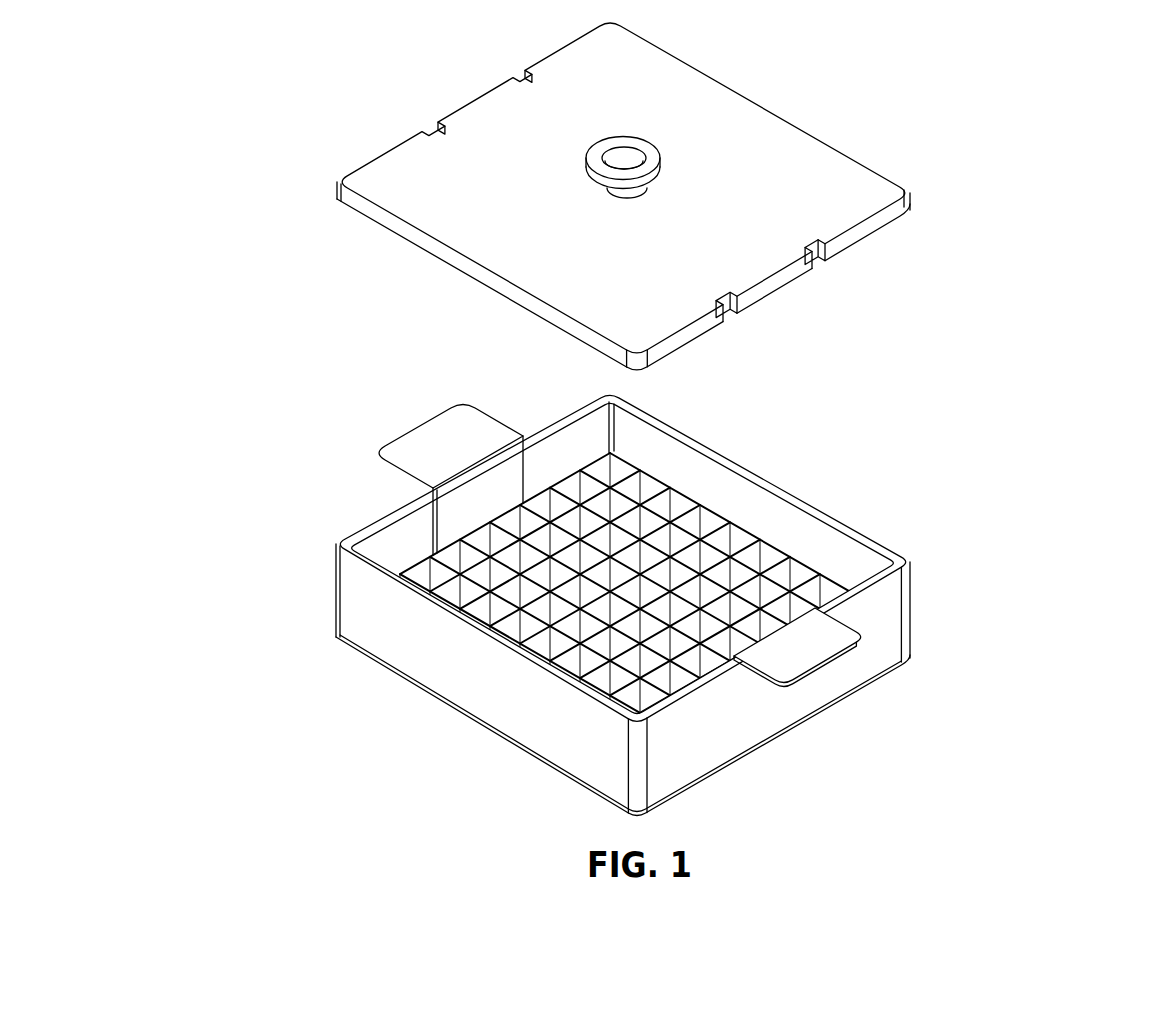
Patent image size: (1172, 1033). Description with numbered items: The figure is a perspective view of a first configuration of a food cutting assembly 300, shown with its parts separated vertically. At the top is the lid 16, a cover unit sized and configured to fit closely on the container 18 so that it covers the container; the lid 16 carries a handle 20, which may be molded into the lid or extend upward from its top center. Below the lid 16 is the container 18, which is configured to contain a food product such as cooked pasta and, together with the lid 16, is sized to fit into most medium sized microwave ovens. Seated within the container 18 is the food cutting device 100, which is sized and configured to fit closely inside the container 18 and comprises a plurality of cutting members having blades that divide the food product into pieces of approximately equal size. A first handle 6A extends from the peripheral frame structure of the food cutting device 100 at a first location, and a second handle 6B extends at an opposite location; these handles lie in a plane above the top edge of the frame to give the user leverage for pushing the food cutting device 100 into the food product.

The food cutting assembly 300 is at (1138, 65).
The lid 16 is at (850, 172).
The handle 20 is at (656, 164).
The container 18 is at (304, 608).
The food cutting device 100 is at (707, 500).
The first handle 6A is at (412, 460).
The second handle 6B is at (820, 646).